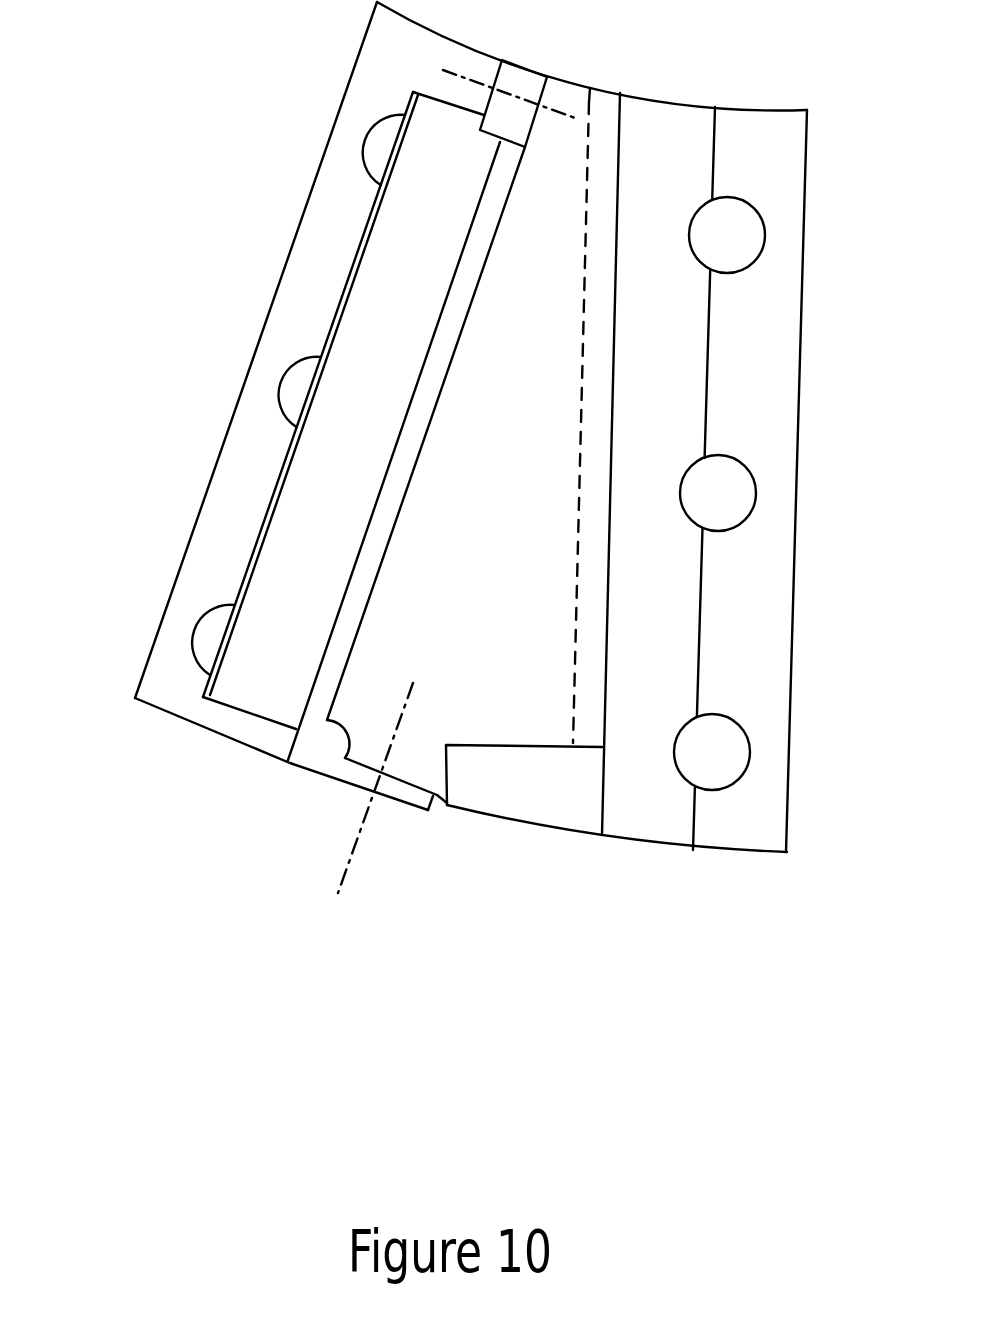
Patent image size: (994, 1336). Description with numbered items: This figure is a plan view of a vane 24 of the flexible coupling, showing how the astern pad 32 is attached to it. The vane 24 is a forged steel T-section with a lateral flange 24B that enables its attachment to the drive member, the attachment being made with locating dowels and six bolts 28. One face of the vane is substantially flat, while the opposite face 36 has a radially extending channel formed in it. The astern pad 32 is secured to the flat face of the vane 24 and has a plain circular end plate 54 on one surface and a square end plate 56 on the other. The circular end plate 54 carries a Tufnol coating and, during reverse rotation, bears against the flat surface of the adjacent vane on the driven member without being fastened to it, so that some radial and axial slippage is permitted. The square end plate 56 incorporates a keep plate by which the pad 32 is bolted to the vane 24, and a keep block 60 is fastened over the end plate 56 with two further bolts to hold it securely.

The vane 24 is at (507, 504).
The lateral flange 24B is at (162, 692).
The bolts 28 is at (742, 243).
The astern pad 32 is at (363, 450).
The opposite face 36 is at (585, 413).
The circular end plate 54 is at (345, 297).
The square end plate 56 is at (318, 752).
The keep block 60 is at (530, 85).